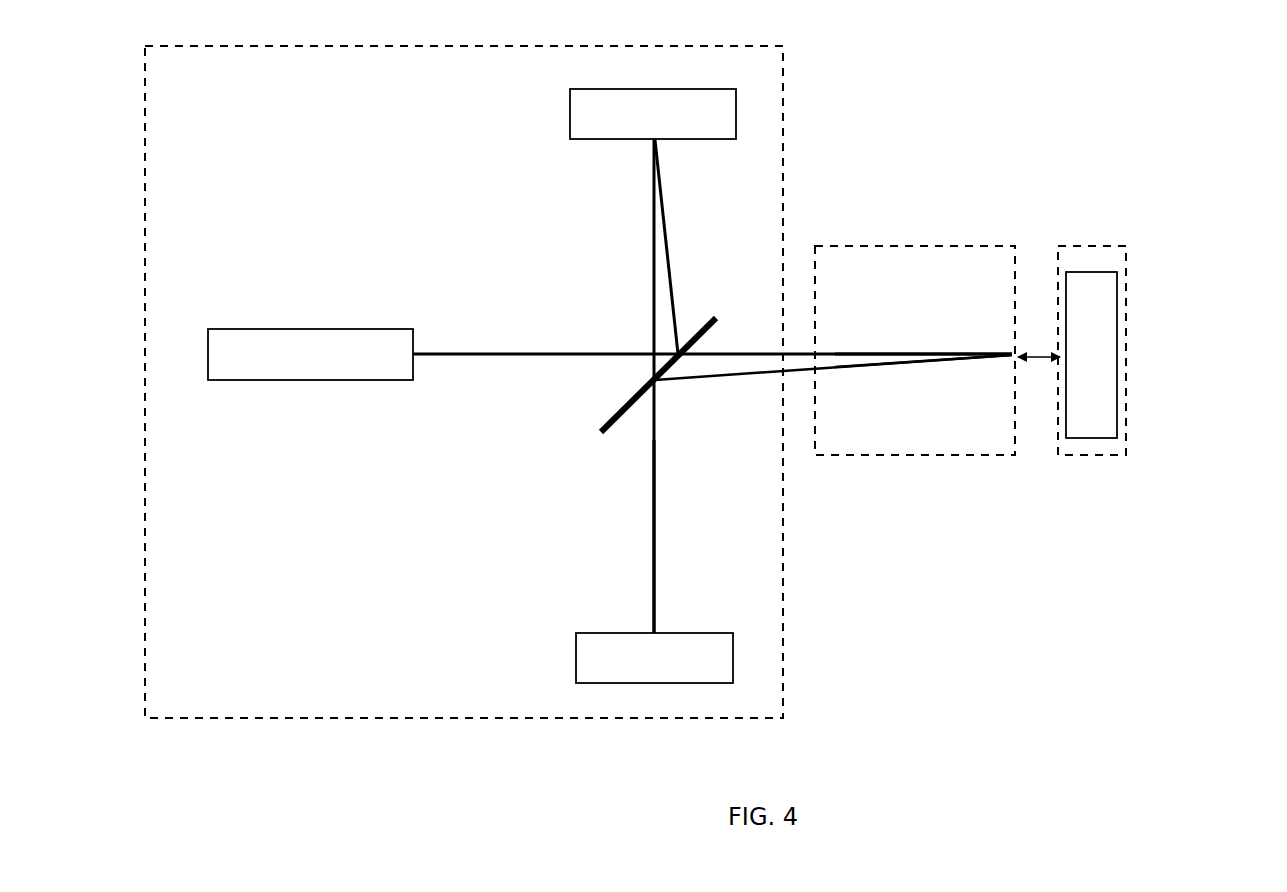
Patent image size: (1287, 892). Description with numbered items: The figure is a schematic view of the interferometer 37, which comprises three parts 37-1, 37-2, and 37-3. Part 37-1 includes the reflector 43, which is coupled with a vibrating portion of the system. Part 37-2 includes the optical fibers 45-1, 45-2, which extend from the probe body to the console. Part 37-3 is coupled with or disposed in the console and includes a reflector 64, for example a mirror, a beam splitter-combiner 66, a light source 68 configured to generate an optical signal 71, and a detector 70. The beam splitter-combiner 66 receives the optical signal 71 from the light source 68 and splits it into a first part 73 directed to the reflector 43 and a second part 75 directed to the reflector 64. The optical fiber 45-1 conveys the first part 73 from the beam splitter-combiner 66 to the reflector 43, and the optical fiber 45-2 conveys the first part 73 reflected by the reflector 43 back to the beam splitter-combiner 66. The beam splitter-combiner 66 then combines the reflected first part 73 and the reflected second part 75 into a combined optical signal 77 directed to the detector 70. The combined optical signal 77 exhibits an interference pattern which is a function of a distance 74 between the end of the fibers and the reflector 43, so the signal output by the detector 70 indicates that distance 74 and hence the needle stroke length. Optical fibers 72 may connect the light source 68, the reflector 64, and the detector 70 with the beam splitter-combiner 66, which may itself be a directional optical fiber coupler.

The interferometer 37 is at (1220, 163).
The part 37-1 is at (1128, 350).
The part 37-2 is at (918, 457).
The part 37-3 is at (465, 720).
The reflector 43 is at (1074, 272).
The optical fiber 45-1 is at (878, 353).
The optical fiber 45-2 is at (923, 400).
The reflector 64 is at (570, 113).
The beam splitter-combiner 66 is at (600, 428).
The light source 68 is at (310, 329).
The detector 70 is at (576, 659).
The optical signal 71 is at (484, 353).
The optical fibers 72 is at (653, 255).
The first part 73 is at (713, 377).
The distance 74 is at (1038, 362).
The second part 75 is at (660, 187).
The combined optical signal 77 is at (652, 555).